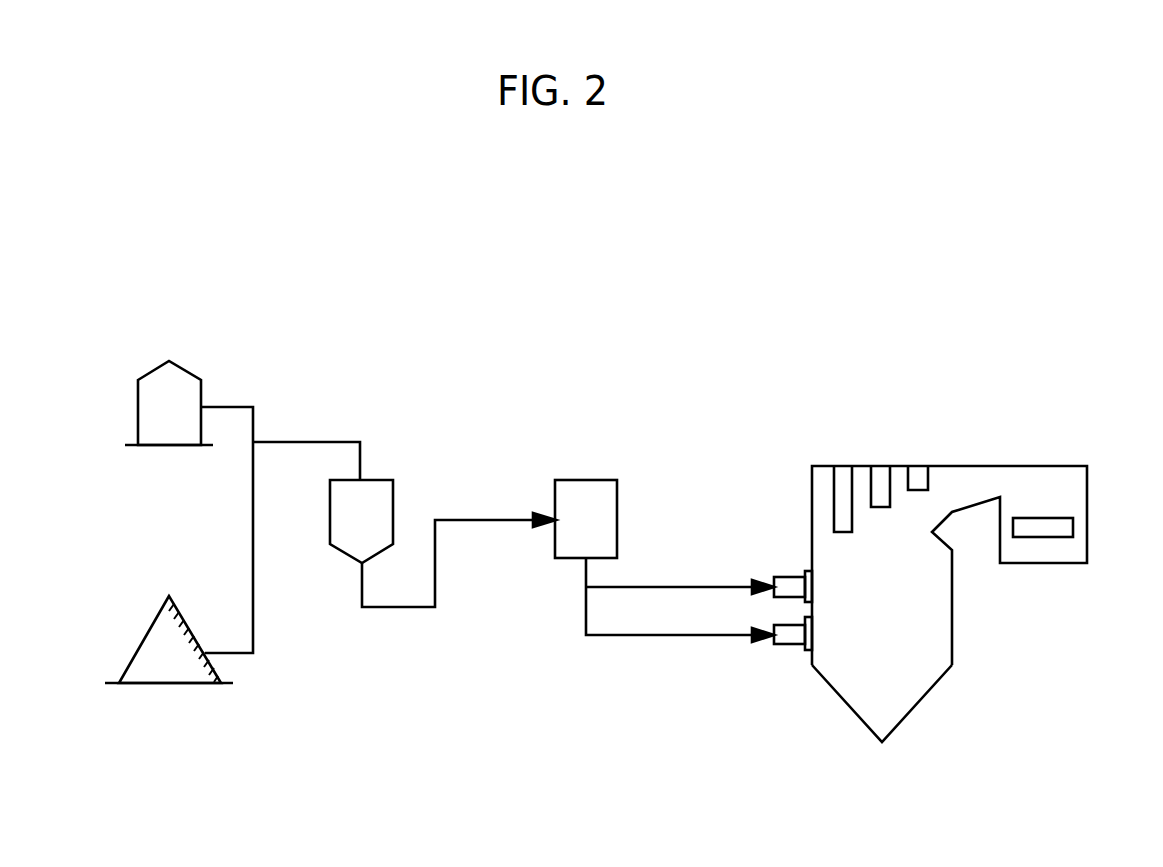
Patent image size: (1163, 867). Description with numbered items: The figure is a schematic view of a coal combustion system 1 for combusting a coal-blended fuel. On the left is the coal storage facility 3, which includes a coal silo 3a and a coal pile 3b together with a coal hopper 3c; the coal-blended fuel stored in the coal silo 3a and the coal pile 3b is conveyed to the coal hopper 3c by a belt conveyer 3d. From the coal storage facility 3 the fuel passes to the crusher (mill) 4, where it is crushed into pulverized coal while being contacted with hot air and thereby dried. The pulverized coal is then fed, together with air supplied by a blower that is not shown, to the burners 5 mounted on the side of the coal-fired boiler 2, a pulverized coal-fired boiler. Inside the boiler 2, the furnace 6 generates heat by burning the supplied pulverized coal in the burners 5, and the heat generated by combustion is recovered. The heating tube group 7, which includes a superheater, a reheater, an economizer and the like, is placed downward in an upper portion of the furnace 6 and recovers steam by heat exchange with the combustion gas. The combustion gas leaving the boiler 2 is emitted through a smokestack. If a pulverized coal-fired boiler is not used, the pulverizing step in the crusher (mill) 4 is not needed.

The coal combustion system 1 is at (258, 230).
The coal-fired boiler 2 is at (968, 466).
The coal storage facility 3 is at (218, 332).
The coal silo 3a is at (143, 415).
The coal pile 3b is at (148, 650).
The coal hopper 3c is at (337, 517).
The belt conveyer 3d is at (303, 442).
The crusher (mill) 4 is at (560, 492).
The burners 5 is at (787, 583).
The furnace 6 is at (922, 677).
The heating tube group 7 is at (918, 473).